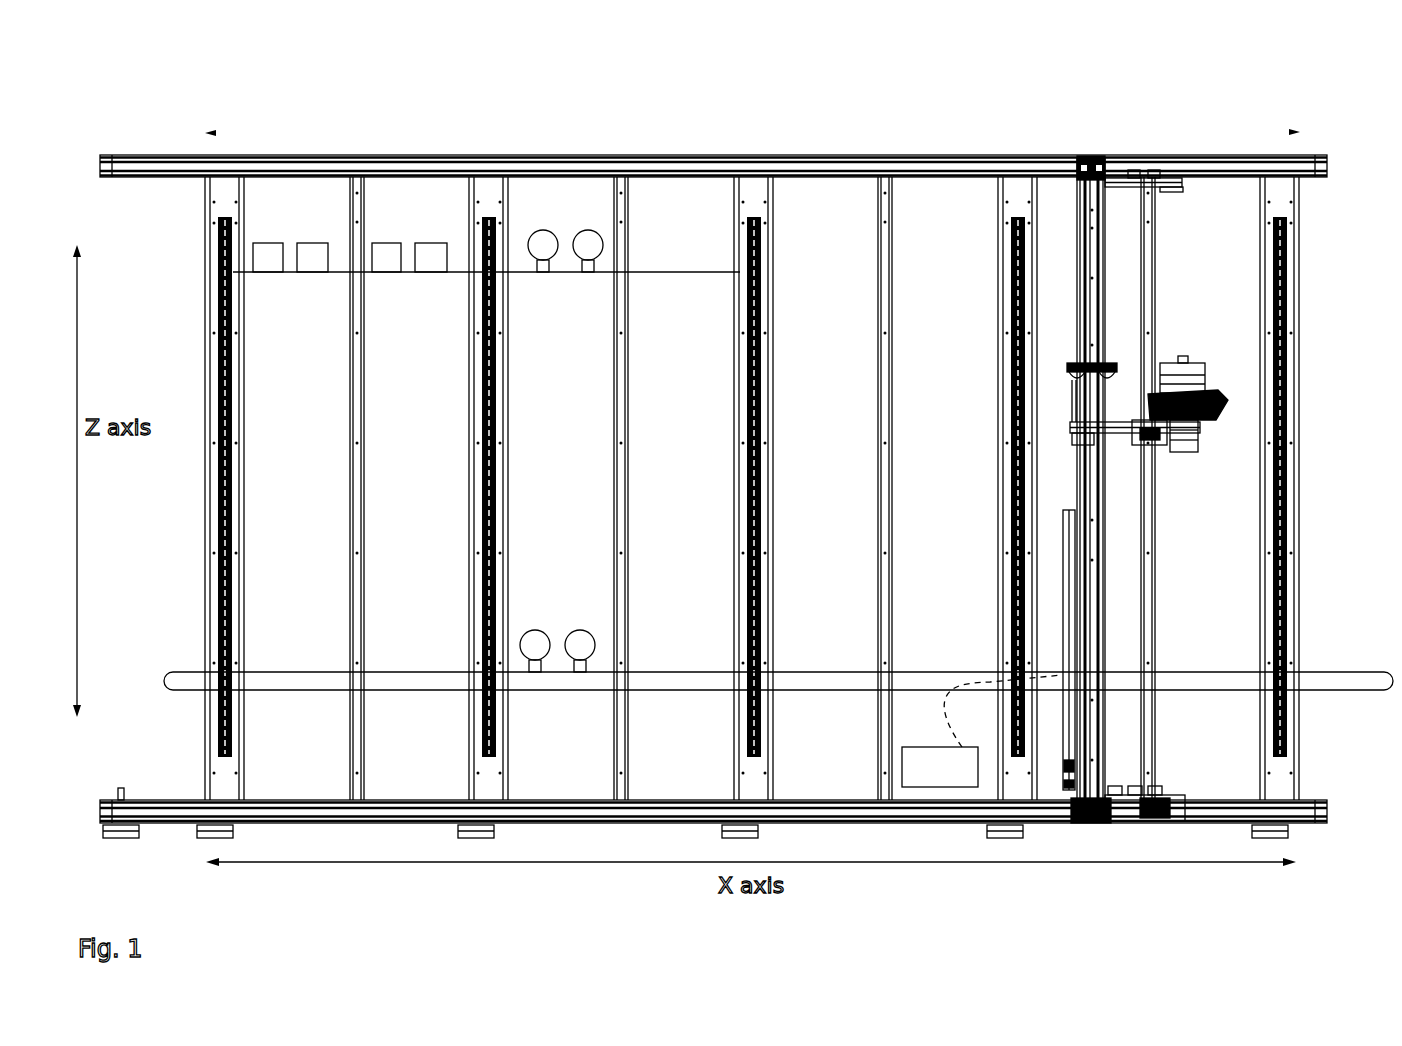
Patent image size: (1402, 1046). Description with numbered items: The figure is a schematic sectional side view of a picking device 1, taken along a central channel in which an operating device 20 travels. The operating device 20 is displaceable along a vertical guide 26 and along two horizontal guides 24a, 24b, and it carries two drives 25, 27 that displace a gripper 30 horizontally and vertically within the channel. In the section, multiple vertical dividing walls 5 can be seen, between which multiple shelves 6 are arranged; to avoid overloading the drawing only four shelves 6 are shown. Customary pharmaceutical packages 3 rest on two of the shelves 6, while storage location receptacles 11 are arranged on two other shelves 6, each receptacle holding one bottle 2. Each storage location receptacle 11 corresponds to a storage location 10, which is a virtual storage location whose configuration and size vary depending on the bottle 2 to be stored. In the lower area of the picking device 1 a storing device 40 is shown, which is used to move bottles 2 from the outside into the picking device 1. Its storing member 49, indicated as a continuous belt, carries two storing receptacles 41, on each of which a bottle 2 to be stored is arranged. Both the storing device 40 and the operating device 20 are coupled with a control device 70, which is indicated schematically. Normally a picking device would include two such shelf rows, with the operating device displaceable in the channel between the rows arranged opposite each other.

The picking device 1 is at (757, 115).
The bottle 2 is at (542, 247).
The pharmaceutical packages 3 is at (268, 258).
The vertical dividing walls 5 is at (245, 197).
The shelves 6 is at (623, 182).
The storage location 10 is at (532, 275).
The storage location receptacle 11 is at (562, 265).
The operating device 20 is at (1167, 594).
The horizontal guide 24a is at (167, 823).
The horizontal guide 24b is at (160, 156).
The drive 25 is at (1160, 823).
The vertical guide 26 is at (1105, 253).
The drive 27 is at (1083, 393).
The gripper 30 is at (1195, 360).
The storing device 40 is at (307, 715).
The storing receptacle 41 is at (533, 662).
The storing member 49 is at (1356, 680).
The control device 70 is at (938, 789).